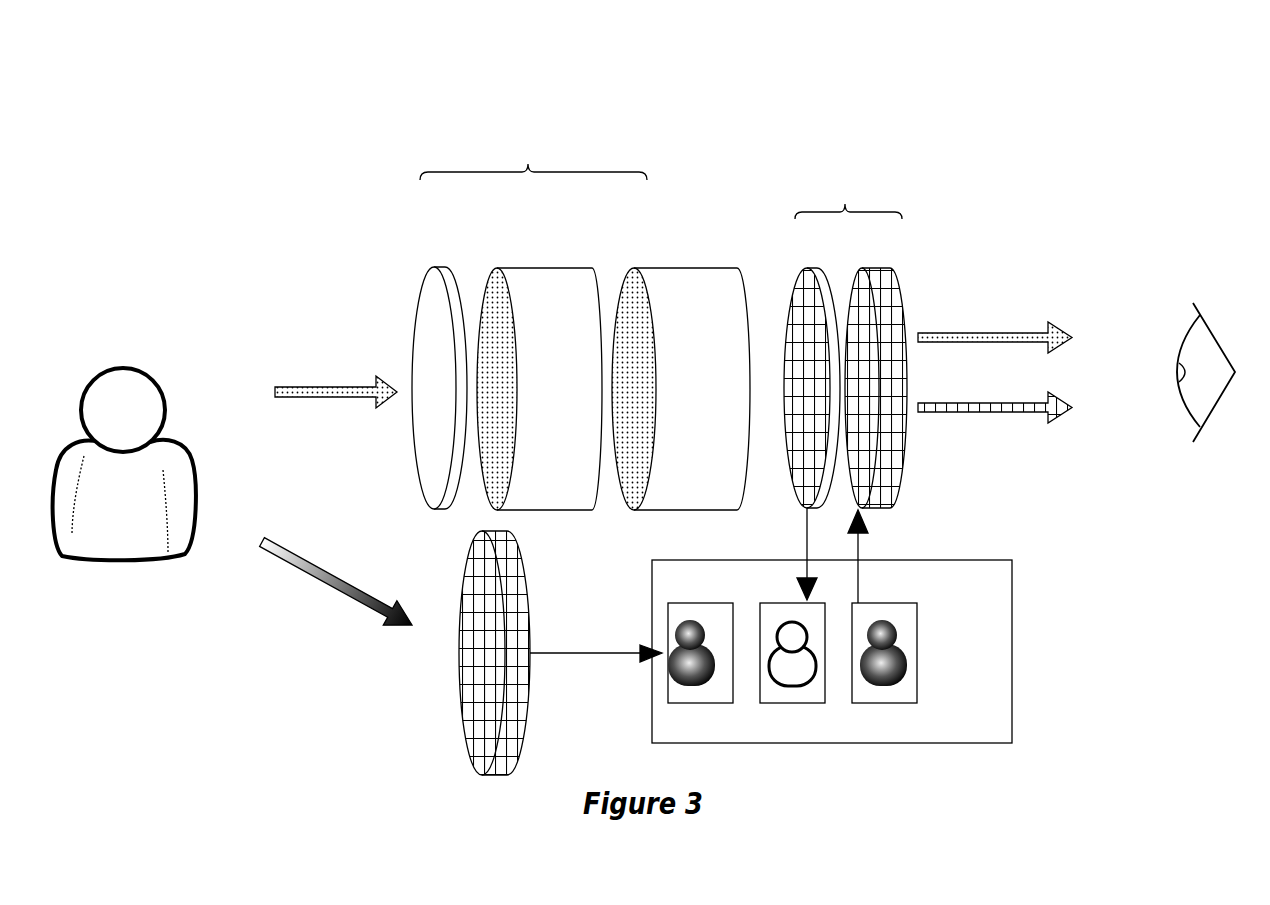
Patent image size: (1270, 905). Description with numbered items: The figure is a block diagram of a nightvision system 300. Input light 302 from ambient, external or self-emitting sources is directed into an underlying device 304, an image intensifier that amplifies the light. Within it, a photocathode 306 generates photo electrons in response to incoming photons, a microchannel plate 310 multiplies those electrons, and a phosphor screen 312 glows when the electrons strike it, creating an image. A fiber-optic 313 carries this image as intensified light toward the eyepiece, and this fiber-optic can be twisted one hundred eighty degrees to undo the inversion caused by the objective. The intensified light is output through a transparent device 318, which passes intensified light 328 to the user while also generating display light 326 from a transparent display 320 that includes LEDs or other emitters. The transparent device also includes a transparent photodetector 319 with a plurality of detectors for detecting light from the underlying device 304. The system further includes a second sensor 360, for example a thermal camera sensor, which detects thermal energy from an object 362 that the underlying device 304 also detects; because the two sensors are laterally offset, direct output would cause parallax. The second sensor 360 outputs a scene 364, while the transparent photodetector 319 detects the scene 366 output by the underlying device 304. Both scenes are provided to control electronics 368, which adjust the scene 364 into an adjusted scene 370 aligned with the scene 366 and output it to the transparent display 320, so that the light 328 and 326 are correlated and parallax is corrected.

The nightvision system 300 is at (835, 62).
The input light 302 is at (303, 385).
The underlying device 304 is at (553, 136).
The photocathode 306 is at (450, 273).
The microchannel plate 310 is at (568, 402).
The phosphor screen 312 is at (636, 268).
The fiber-optic 313 is at (718, 402).
The transparent device 318 is at (864, 175).
The transparent photodetector 319 is at (810, 267).
The transparent display 320 is at (887, 267).
The display light 326 is at (945, 333).
The intensified light 328 is at (940, 403).
The second sensor 360 is at (518, 582).
The object 362 is at (122, 390).
The scene 364 is at (678, 612).
The scene 366 is at (783, 688).
The control electronics 368 is at (987, 731).
The adjusted scene 370 is at (902, 618).